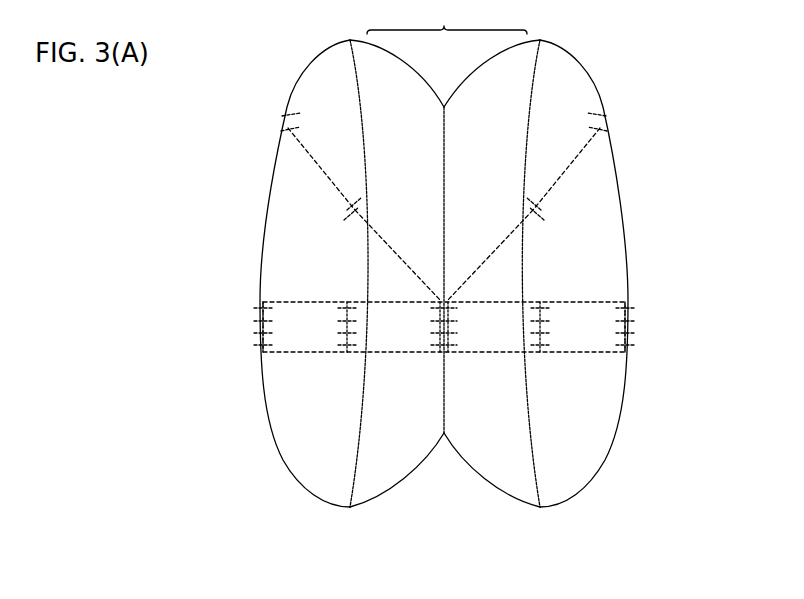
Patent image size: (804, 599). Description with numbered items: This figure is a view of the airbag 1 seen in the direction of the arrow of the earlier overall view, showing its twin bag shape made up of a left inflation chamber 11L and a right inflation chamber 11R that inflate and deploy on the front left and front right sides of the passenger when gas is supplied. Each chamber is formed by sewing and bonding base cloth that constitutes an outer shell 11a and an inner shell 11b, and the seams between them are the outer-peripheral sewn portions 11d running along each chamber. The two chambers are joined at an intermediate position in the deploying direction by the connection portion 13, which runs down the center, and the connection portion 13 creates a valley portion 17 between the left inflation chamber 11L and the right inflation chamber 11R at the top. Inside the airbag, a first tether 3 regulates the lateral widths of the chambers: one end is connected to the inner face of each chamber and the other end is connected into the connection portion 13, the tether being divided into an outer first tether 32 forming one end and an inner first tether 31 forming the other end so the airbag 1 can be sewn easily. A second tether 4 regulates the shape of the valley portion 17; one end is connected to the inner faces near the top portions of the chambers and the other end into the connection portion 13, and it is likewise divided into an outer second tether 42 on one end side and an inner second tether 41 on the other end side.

The airbag 1 is at (655, 52).
The valley portion 17 is at (447, 23).
The left inflation chamber 11L is at (272, 218).
The right inflation chamber 11R is at (613, 218).
The outer-peripheral sewn portions 11d is at (366, 103).
The connection portion 13 is at (446, 136).
The outer shell 11a is at (290, 477).
The inner shell 11b is at (413, 477).
The outer second tether 42 is at (318, 167).
The inner second tether 41 is at (407, 264).
The second tether 4 is at (351, 225).
The first tether 3 is at (349, 361).
The inner first tether 31 is at (402, 353).
The outer first tether 32 is at (293, 353).